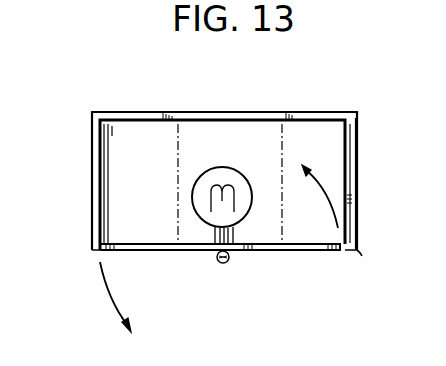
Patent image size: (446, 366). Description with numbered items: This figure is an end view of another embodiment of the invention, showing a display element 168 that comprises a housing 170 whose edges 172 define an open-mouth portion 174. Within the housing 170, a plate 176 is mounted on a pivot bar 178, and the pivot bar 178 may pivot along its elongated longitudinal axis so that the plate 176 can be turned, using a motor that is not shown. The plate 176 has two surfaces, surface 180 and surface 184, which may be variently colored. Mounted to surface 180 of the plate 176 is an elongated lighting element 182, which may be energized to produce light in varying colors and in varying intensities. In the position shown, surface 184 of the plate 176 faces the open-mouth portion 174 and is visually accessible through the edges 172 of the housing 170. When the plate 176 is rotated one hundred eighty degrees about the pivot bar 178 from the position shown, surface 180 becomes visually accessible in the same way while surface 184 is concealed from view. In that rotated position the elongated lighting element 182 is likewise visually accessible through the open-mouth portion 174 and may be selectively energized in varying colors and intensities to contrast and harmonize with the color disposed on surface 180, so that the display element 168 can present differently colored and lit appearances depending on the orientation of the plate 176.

The display element 168 is at (262, 109).
The housing 170 is at (347, 174).
The edges 172 is at (92, 254).
The open-mouth portion 174 is at (293, 220).
The plate 176 is at (328, 251).
The pivot bar 178 is at (225, 264).
The surface 180 is at (118, 244).
The elongated lighting element 182 is at (242, 159).
The surface 184 is at (184, 251).